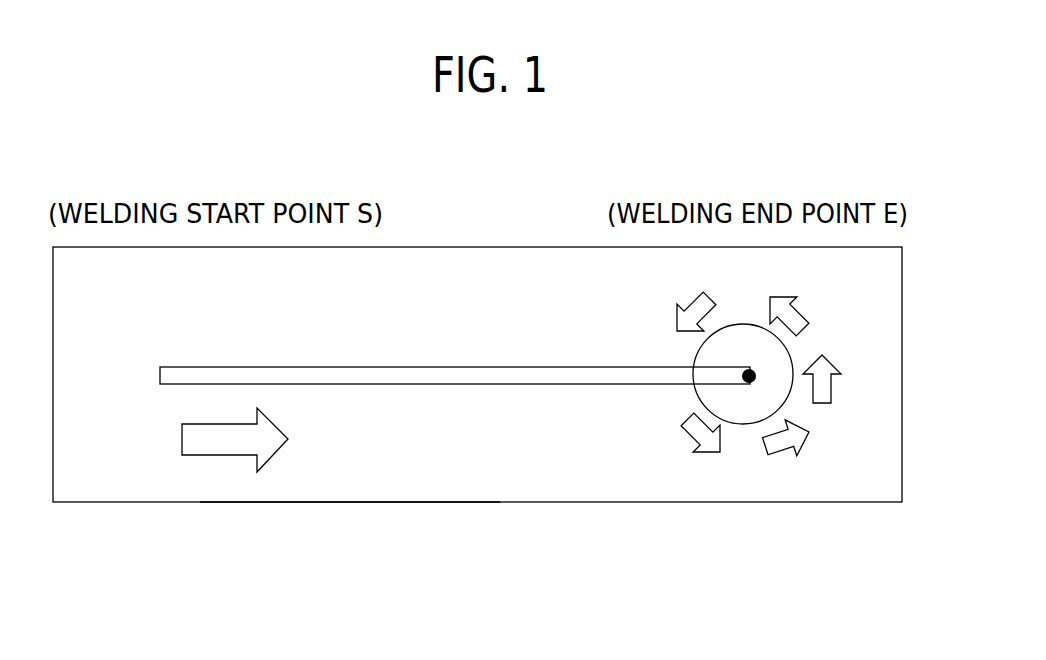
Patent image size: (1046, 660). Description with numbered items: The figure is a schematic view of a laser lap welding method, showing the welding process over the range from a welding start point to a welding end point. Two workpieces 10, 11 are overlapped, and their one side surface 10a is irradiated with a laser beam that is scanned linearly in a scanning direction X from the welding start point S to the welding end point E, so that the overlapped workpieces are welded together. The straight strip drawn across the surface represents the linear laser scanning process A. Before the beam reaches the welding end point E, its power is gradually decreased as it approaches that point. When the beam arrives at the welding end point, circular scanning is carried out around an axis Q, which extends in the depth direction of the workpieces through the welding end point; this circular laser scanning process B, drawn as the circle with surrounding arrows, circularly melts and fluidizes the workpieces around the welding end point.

The workpiece 10 is at (477, 420).
The workpiece 11 is at (478, 508).
The one side surface 10a is at (352, 480).
The linear laser scanning process A is at (450, 362).
The circular laser scanning process B is at (745, 430).
The axis Q is at (760, 371).
The scanning direction X is at (222, 458).